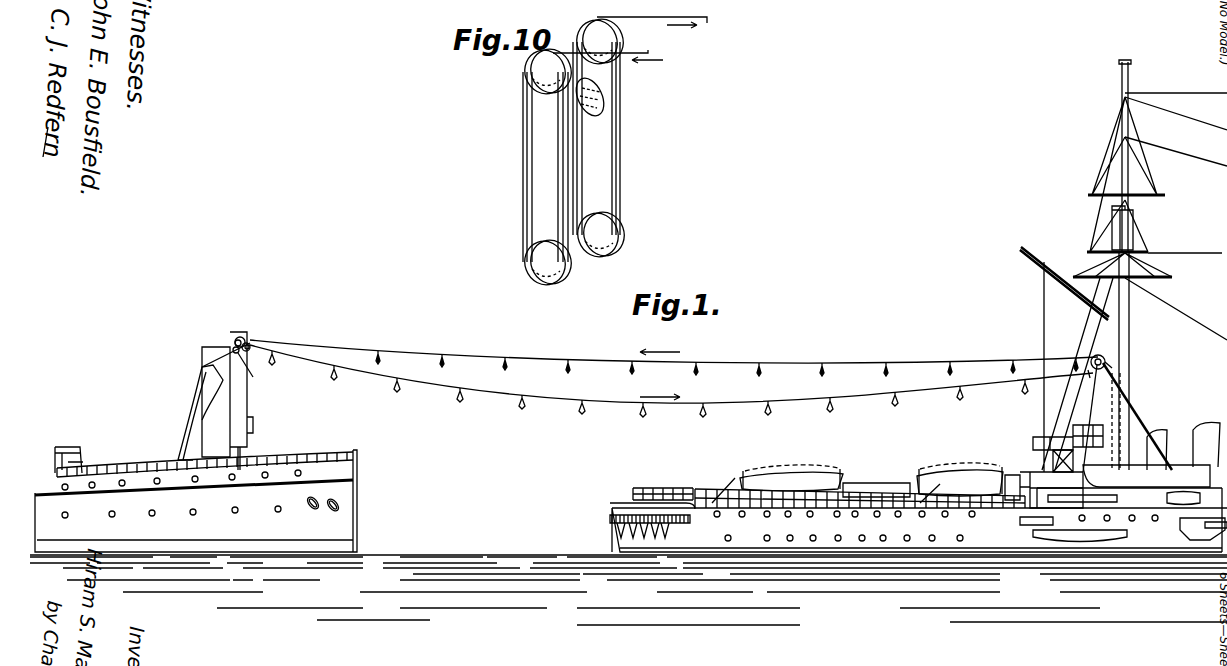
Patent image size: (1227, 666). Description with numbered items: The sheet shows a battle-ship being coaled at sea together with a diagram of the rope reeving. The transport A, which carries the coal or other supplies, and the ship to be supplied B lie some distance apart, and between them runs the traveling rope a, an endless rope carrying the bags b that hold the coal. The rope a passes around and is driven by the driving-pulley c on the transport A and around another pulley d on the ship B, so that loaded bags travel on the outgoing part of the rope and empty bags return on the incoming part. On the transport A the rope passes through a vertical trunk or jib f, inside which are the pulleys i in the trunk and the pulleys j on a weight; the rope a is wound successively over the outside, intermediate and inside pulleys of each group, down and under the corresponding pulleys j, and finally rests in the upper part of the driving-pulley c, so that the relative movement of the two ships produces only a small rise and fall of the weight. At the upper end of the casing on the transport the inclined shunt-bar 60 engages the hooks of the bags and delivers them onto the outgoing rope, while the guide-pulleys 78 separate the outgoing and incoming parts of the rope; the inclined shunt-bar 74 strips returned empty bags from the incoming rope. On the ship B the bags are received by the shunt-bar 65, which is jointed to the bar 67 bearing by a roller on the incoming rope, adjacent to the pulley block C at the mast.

In FIG. 10, the traveling rope a is at (676, 42).
In FIG. 1, the traveling rope a is at (558, 360).
In FIG. 1, the bags b is at (578, 412).
In FIG. 10, the driving-pulley c is at (590, 104).
In FIG. 10, the pulleys in the trunk i is at (557, 52).
In FIG. 10, the pulleys on the weight j is at (542, 246).
In FIG. 1, the transport A is at (345, 527).
In FIG. 1, the ship to be supplied B is at (700, 505).
In FIG. 1, the pulley block on mast C is at (1098, 364).
In FIG. 1, the pulley on the ship B d is at (1092, 356).
In FIG. 1, the derrick arm f is at (202, 368).
In FIG. 1, the shunt-bar 60 is at (262, 337).
In FIG. 1, the shunt-bar 65 is at (1090, 376).
In FIG. 1, the bar 67 is at (1105, 362).
In FIG. 1, the inclined shunt-bar 74 is at (254, 373).
In FIG. 1, the guide-pulleys 78 is at (227, 335).